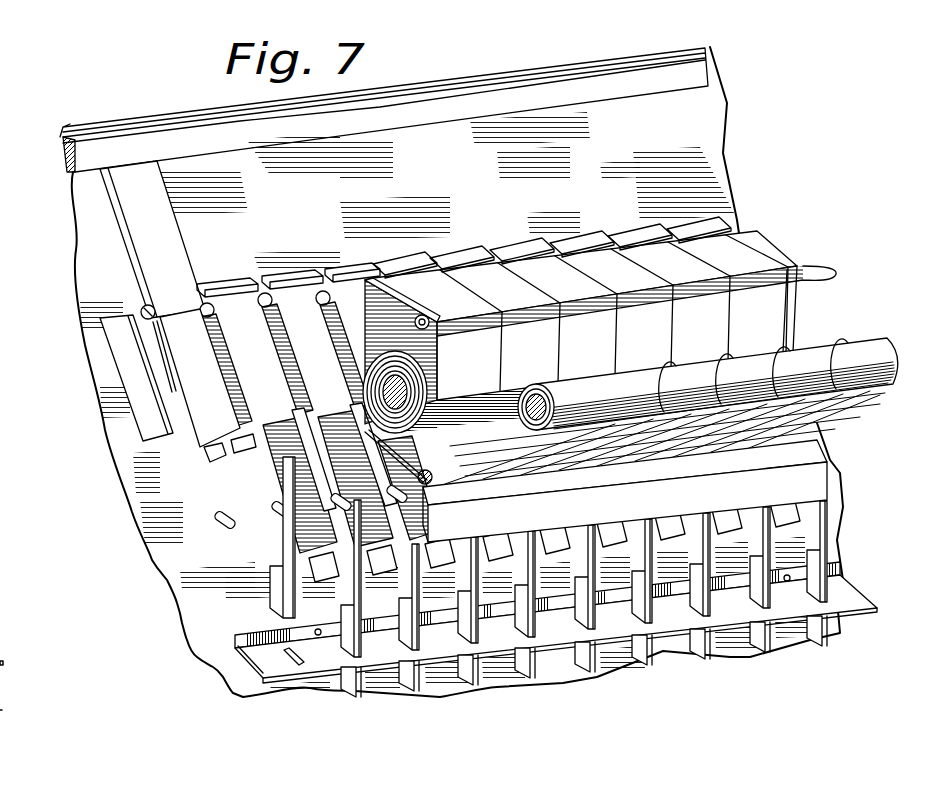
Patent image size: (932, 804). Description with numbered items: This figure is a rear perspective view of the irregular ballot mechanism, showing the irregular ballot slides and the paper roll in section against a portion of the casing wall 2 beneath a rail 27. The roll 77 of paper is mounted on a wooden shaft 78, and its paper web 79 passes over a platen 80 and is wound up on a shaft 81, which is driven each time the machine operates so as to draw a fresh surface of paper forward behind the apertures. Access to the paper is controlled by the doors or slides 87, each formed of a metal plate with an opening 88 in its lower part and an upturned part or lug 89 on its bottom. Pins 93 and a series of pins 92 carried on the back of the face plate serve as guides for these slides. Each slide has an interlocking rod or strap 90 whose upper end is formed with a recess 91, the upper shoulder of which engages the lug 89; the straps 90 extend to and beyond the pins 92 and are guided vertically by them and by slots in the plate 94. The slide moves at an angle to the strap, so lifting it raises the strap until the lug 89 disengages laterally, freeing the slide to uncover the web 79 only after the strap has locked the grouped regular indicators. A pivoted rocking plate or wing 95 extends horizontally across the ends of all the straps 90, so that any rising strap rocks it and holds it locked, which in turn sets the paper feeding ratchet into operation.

The wall 2 is at (457, 372).
The top rail beam 27 is at (232, 145).
The door or slide 87 is at (163, 251).
The pin 93 is at (142, 306).
The platen 80 is at (333, 330).
The opening 88 is at (212, 418).
The upturned part or lug 89 is at (244, 452).
The pin 92 is at (222, 523).
The paper web 79 is at (857, 415).
The roll of paper 77 is at (410, 376).
The wooden shaft 78 is at (408, 390).
The shaft 81 is at (520, 424).
The plate 94 is at (372, 653).
The interlocking rod or strap 90 is at (285, 611).
The recess 91 is at (287, 560).
The pivoted or rocking plate or wing 95 is at (625, 491).